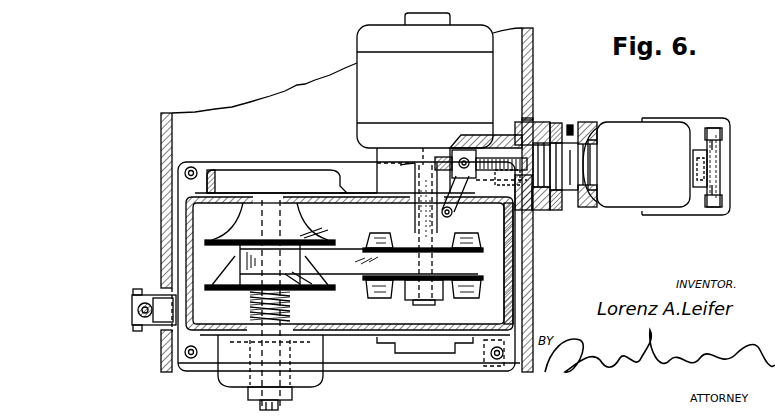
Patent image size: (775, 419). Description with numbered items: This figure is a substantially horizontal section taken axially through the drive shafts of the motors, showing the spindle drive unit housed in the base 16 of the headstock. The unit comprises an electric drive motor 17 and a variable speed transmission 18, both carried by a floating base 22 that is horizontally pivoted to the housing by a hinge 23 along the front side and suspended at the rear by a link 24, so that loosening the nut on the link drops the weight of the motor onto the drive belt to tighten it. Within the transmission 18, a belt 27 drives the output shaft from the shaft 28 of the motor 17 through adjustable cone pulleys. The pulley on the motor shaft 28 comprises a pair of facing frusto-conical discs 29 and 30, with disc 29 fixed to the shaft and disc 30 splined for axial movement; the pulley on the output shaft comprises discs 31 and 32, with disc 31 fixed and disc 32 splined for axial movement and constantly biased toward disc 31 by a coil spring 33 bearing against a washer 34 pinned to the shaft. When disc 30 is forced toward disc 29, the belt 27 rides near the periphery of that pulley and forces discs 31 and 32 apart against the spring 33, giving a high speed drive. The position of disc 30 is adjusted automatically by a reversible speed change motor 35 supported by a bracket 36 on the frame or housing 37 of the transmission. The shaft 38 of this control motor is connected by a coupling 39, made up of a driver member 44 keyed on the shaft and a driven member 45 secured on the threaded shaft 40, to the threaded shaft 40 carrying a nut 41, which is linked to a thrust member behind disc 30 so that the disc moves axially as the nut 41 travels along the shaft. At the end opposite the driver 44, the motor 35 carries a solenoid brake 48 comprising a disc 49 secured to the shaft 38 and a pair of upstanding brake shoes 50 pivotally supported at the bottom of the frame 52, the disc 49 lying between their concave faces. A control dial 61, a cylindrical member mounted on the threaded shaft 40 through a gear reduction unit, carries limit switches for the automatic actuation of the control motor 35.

The base of headstock 16 is at (161, 148).
The electric drive motor 17 is at (357, 47).
The variable speed transmission 18 is at (222, 257).
The floating base 22 is at (360, 350).
The hinge 23 is at (497, 362).
The link 24 is at (132, 308).
The belt 27 is at (345, 255).
The motor shaft 28 is at (418, 180).
The frusto-conical disc 29 is at (400, 288).
The frusto-conical disc 30 is at (396, 238).
The frusto-conical disc 31 is at (227, 240).
The frusto-conical disc 32 is at (230, 288).
The coil spring 33 is at (292, 310).
The washer 34 is at (245, 348).
The reversible speed change motor 35 is at (655, 190).
The bracket 36 is at (588, 200).
The frame or housing for the transmission 37 is at (513, 247).
The shaft for control motor 38 is at (590, 165).
The coupling 39 is at (556, 207).
The threaded shaft 40 is at (502, 158).
The nut 41 is at (465, 150).
The driver member 44 is at (584, 150).
The driven member 45 is at (555, 150).
The solenoid brake 48 is at (733, 150).
The disc 49 is at (718, 173).
The brake shoes 50 is at (722, 130).
The frame 52 is at (697, 118).
The control dial 61 is at (571, 125).